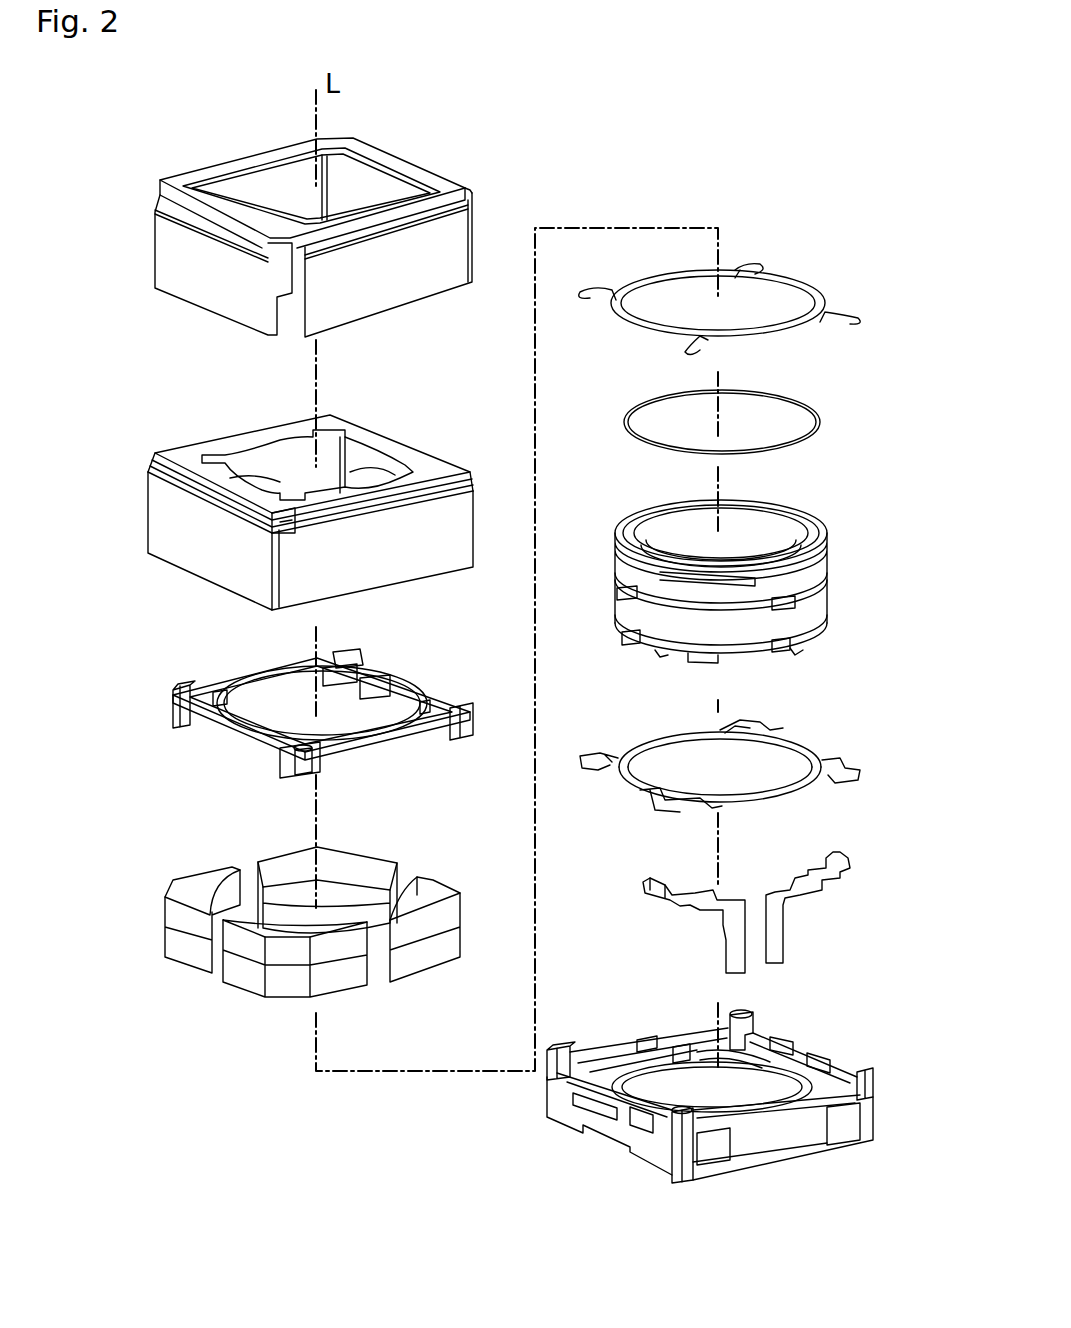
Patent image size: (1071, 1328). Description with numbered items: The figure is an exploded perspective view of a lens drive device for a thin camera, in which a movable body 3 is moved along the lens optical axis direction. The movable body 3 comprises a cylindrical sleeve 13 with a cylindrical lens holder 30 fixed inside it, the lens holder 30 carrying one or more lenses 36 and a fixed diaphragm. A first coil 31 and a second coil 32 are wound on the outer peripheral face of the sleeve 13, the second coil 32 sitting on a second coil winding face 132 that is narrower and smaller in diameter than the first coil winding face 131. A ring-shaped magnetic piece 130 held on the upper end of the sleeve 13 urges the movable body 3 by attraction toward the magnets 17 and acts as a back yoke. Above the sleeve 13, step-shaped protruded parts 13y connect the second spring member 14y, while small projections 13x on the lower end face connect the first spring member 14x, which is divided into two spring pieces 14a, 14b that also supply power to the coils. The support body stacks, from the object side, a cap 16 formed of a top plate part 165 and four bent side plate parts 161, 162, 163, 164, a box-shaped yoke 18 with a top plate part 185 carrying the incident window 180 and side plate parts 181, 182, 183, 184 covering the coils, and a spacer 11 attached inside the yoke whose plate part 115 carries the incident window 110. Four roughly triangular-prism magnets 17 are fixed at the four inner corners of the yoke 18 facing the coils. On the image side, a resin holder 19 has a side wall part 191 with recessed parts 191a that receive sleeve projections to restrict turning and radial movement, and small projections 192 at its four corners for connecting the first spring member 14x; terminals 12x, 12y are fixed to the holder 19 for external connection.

The movable body 3 is at (738, 565).
The spacer 11 is at (297, 712).
The incident window 110 is at (260, 683).
The plate part 115 is at (423, 693).
The terminal 12x is at (687, 905).
The terminal 12y is at (787, 905).
The sleeve 13 is at (738, 565).
The small projections 13x is at (663, 650).
The step-shaped protruded parts 13y is at (668, 563).
The magnetic piece 130 is at (813, 401).
The first coil 131 is at (612, 588).
The second coil winding face 132 is at (612, 552).
The spring piece 14a is at (747, 793).
The spring piece 14b is at (790, 742).
The first spring member 14x is at (762, 756).
The second spring member 14y is at (792, 276).
The cap 16 is at (309, 213).
The side plate part 161 is at (172, 242).
The side plate part 162 is at (440, 286).
The side plate part 163 is at (474, 192).
The side plate part 164 is at (268, 186).
The top plate part 165 is at (368, 148).
The magnet 17 is at (273, 875).
The yoke 18 is at (251, 524).
The incident window 180 is at (257, 472).
The side plate part 181 is at (185, 555).
The side plate part 182 is at (392, 577).
The side plate part 183 is at (360, 472).
The side plate part 184 is at (260, 478).
The top plate part 185 is at (197, 468).
The holder 19 is at (744, 1106).
The side wall part 191 is at (692, 1033).
The recessed parts 191a is at (647, 1040).
The small projection 192 is at (598, 1083).
The lens holder 30 is at (673, 513).
The first coil 31 is at (812, 618).
The second coil 32 is at (818, 580).
The lens 36 is at (740, 527).